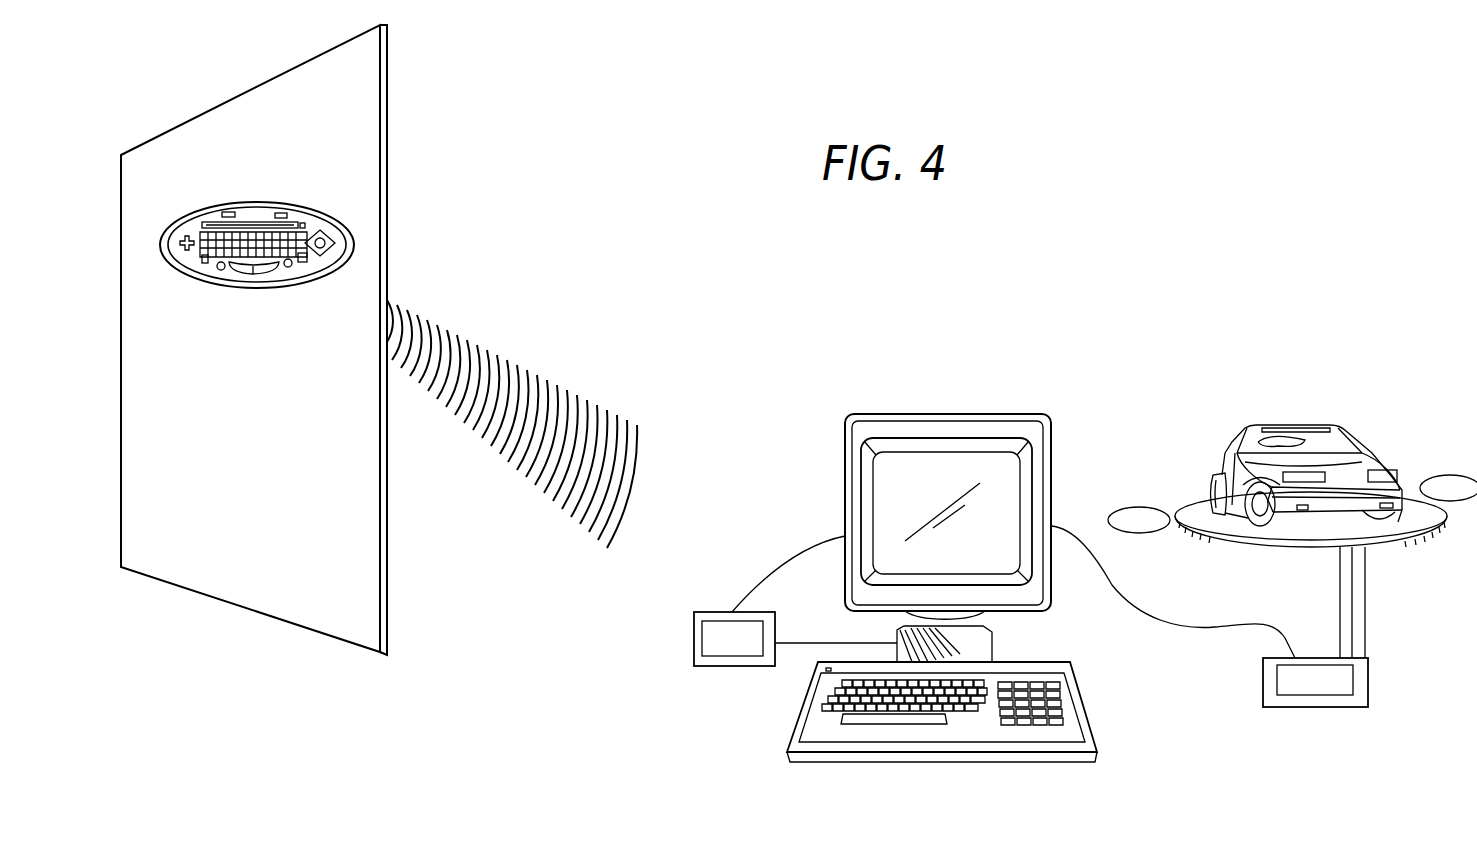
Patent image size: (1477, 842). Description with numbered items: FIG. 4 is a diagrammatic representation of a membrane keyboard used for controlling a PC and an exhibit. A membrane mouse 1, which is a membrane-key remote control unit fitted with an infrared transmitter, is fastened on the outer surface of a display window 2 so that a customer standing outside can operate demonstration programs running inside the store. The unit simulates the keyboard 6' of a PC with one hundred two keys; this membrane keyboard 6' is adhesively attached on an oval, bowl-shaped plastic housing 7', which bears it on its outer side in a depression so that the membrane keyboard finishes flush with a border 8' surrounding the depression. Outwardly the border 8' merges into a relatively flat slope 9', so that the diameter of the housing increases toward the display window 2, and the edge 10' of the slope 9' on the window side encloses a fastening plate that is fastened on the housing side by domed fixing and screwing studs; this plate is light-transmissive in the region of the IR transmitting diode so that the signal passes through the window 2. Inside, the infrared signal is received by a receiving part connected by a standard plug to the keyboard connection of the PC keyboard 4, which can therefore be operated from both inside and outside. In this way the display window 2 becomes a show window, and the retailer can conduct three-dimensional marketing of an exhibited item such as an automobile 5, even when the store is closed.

The membrane mouse 1 is at (311, 239).
The display window 2 is at (387, 77).
The keyboard 4 is at (1015, 406).
The automobile 5 is at (1365, 432).
The membrane keyboard 6' is at (372, 204).
The plastic housing 7' is at (304, 180).
The border 8' is at (190, 299).
The slope 9' is at (328, 286).
The edge 10' is at (386, 249).